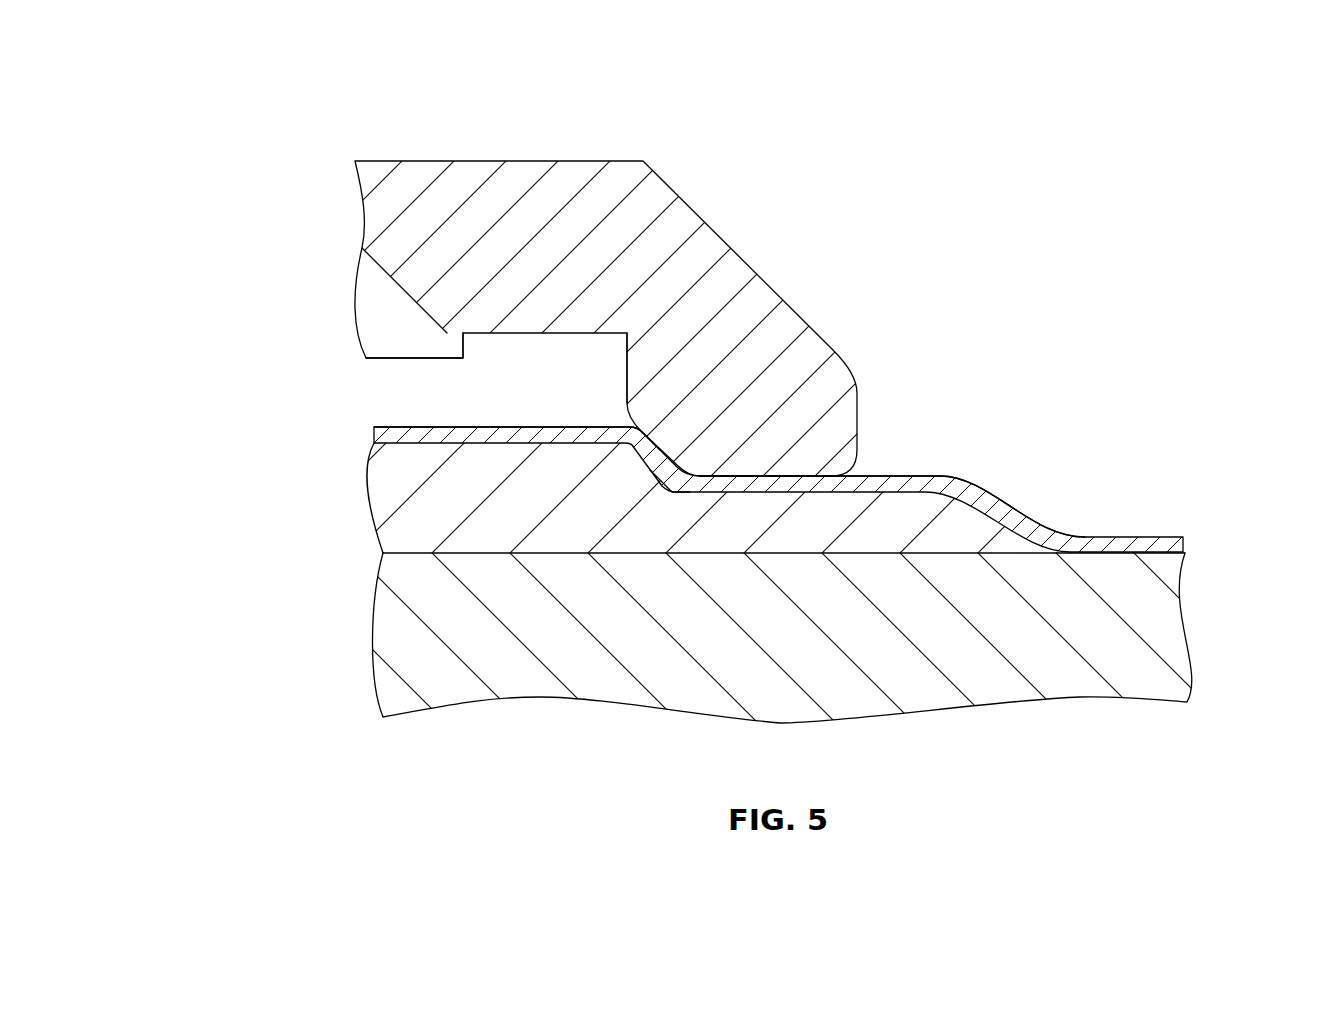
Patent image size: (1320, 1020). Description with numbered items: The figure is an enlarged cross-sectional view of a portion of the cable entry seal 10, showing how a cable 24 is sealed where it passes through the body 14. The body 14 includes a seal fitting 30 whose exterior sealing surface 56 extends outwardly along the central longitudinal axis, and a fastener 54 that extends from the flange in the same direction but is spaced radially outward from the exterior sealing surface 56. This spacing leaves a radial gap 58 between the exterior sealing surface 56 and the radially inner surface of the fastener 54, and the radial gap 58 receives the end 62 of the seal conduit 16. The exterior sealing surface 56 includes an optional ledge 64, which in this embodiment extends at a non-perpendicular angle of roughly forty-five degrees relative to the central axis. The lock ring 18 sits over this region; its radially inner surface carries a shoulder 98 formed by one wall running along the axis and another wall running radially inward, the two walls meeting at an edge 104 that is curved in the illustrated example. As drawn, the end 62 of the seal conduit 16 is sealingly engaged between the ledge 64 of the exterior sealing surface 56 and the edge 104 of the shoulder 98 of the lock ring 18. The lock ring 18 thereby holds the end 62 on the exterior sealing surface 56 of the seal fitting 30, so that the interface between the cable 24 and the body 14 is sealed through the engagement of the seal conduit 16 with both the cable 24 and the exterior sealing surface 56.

The cable entry seal 10 is at (230, 143).
The body 14 is at (373, 487).
The seal conduit 16 is at (1042, 505).
The lock ring 18 is at (582, 158).
The cable 24 is at (1190, 650).
The seal fitting 30 is at (385, 528).
The fastener 54 is at (357, 295).
The exterior sealing surface 56 is at (450, 428).
The radial gap 58 is at (358, 378).
The end 62 is at (562, 425).
The ledge 64 is at (647, 440).
The shoulder 98 is at (626, 380).
The edge 104 is at (670, 488).